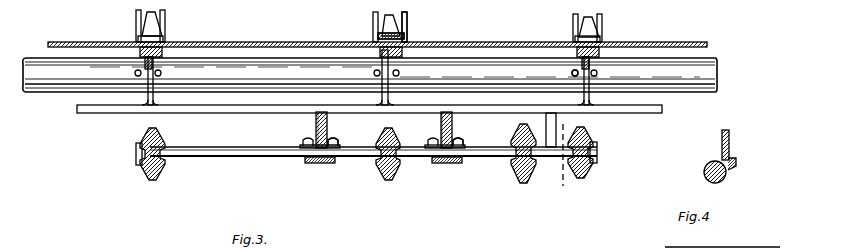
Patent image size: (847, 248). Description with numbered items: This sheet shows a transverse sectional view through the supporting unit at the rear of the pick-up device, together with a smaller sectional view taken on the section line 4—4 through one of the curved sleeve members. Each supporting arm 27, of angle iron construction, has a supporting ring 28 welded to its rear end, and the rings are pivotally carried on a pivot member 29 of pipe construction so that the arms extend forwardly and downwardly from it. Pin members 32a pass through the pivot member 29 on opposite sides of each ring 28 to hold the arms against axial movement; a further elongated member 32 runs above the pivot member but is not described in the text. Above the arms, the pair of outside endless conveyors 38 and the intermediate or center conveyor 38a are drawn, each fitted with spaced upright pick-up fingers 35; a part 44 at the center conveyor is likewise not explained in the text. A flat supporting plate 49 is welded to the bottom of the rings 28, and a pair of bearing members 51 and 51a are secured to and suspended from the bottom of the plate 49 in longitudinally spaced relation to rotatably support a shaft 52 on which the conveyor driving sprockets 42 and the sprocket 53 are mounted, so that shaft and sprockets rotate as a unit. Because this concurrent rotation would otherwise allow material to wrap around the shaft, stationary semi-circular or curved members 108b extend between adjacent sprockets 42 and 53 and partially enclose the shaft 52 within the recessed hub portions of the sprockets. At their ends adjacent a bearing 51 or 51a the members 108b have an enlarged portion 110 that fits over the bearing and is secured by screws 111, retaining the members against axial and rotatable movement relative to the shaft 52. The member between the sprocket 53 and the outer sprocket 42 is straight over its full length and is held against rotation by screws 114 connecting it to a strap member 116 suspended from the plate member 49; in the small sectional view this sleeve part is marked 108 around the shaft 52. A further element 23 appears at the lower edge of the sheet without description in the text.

In FIG. 3, the pivot member 29 is at (56, 90).
In FIG. 3, the top rail 32 is at (243, 42).
In FIG. 3, the pin members 32a is at (165, 71).
In FIG. 3, the flat supporting plate 49 is at (103, 113).
In FIG. 3, the outside endless conveyors 38 is at (163, 33).
In FIG. 3, the upright pick-up fingers 35 is at (578, 33).
In FIG. 3, the supporting arms 27 is at (375, 50).
In FIG. 3, the clamp nut 44 is at (406, 27).
In FIG. 3, the intermediate or center conveyor 38a is at (408, 30).
In FIG. 3, the supporting ring 28 is at (400, 90).
In FIG. 3, the shaft 52 is at (483, 157).
In FIG. 4, the shaft 52 is at (735, 168).
In FIG. 3, the conveyor driving sprockets 42 is at (145, 169).
In FIG. 3, the sprocket 53 is at (537, 178).
In FIG. 3, the bearing member 51 is at (325, 160).
In FIG. 3, the bearing member 51a is at (441, 160).
In FIG. 3, the enlarged portion 110 is at (333, 143).
In FIG. 3, the screws 111 is at (329, 124).
In FIG. 3, the stationary semi-circular curved members 108b is at (270, 147).
In FIG. 3, the strap member 116 is at (545, 121).
In FIG. 3, the section line 4— 4 is at (570, 127).
In FIG. 4, the screws 114 is at (728, 160).
In FIG. 4, the nut 108 is at (738, 162).
In FIG. 4, the frame member 23 is at (751, 247).